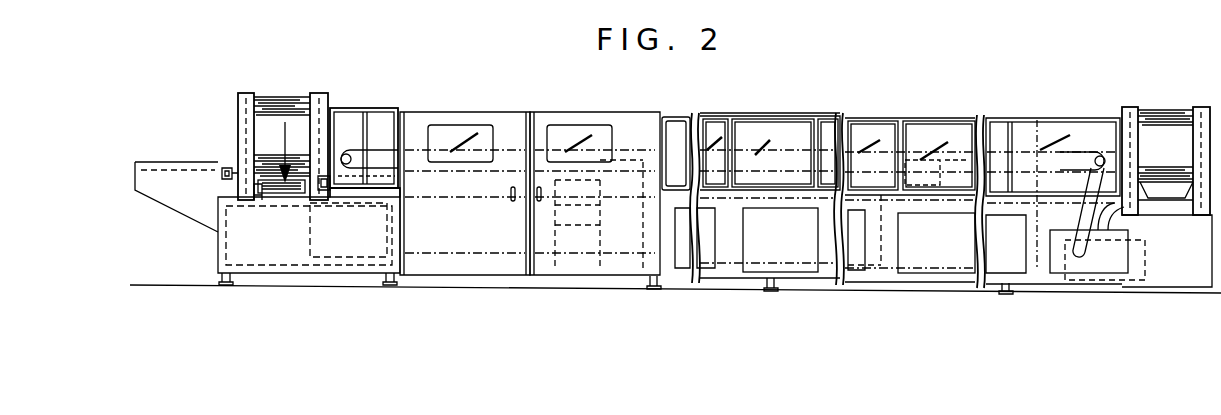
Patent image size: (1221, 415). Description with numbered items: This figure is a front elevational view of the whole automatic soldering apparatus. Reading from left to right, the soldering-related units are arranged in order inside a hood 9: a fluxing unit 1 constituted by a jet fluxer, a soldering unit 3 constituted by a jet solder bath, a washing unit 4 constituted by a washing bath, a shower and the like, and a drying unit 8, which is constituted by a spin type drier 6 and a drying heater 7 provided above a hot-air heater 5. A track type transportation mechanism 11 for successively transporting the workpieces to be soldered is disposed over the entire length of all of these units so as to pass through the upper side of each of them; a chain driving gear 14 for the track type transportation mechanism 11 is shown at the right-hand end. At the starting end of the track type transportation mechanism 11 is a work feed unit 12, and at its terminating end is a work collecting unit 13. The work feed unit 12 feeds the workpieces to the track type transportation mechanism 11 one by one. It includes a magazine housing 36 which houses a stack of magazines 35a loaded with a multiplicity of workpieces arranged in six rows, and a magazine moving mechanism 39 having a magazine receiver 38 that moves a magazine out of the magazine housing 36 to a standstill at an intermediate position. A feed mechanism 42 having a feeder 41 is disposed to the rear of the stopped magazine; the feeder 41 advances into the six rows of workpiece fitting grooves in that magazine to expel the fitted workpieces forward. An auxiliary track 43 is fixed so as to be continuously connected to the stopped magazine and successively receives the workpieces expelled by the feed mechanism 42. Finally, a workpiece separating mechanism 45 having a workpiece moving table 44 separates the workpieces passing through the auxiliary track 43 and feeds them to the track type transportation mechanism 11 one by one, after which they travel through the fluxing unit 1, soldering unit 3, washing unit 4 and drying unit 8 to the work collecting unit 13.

The fluxing unit 1 is at (460, 255).
The soldering unit 3 is at (578, 223).
The washing unit 4 is at (768, 262).
The hot-air heater 5 is at (966, 277).
The spin type drier 6 is at (912, 165).
The drying heater 7 is at (962, 163).
The drying unit 8 is at (938, 255).
The hood 9 is at (800, 114).
The track type transportation mechanism 11 is at (754, 152).
The work feed unit 12 is at (342, 99).
The work collecting unit 13 is at (1118, 107).
The chain driving gear 14 is at (1067, 257).
The magazines 35a is at (285, 100).
The magazine housing 36 is at (240, 97).
The magazine receiver 38 is at (302, 185).
The magazine moving mechanism 39 is at (265, 191).
The feeder 41 is at (222, 168).
The feed mechanism 42 is at (180, 162).
The auxiliary track 43 is at (323, 178).
The workpiece moving table 44 is at (331, 179).
The workpiece separating mechanism 45 is at (370, 192).